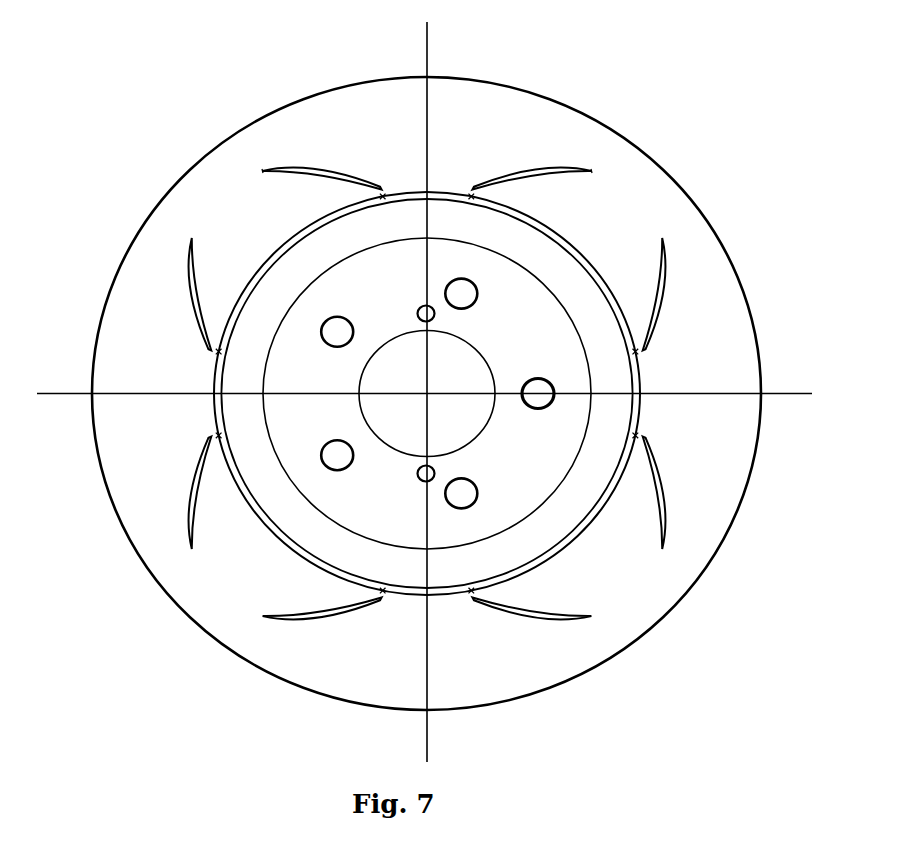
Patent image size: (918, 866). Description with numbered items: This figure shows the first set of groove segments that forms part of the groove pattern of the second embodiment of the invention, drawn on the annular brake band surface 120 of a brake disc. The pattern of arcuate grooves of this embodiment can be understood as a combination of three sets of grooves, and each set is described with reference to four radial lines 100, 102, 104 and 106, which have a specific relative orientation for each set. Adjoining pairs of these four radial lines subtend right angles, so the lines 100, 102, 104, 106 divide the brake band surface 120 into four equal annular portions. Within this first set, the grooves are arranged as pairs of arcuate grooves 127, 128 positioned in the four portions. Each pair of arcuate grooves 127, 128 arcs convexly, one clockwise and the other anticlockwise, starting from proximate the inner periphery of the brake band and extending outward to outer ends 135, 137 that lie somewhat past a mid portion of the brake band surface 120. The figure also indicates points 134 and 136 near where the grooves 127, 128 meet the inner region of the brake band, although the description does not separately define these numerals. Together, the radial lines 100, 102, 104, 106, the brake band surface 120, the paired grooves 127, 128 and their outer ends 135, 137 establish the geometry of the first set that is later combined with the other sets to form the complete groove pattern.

The radial line 100 is at (427, 46).
The radial line 102 is at (782, 394).
The radial line 104 is at (427, 742).
The radial line 106 is at (72, 393).
The brake band surface 120 is at (427, 393).
The arcuate groove 127 is at (320, 173).
The arcuate groove 128 is at (545, 173).
The vane attachment point 134 is at (384, 194).
The outer end 135 is at (263, 171).
The vane attachment point 136 is at (470, 194).
The outer end 137 is at (593, 176).